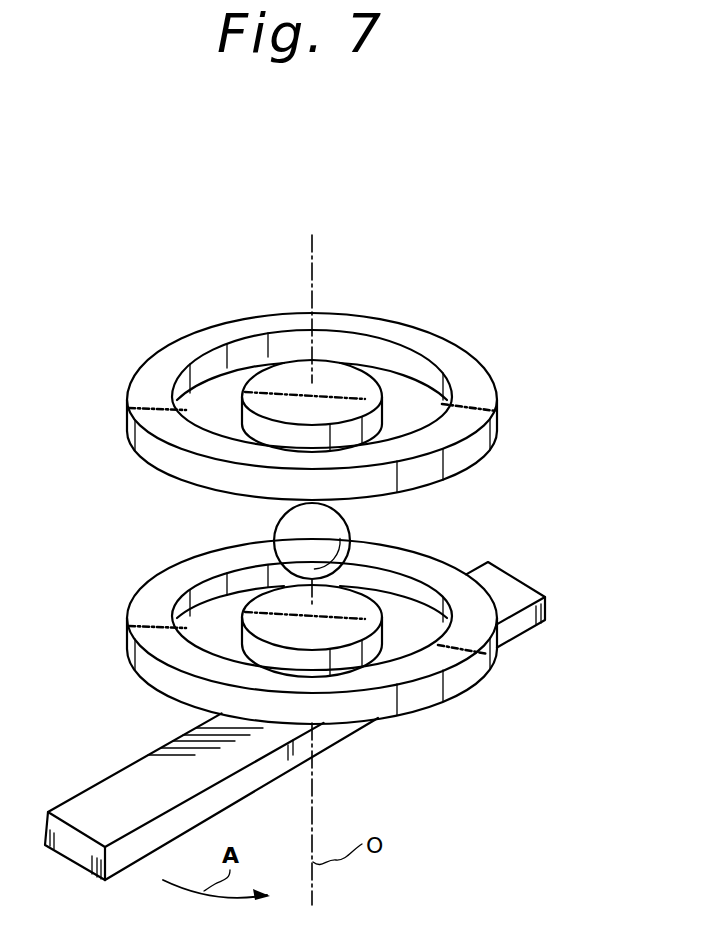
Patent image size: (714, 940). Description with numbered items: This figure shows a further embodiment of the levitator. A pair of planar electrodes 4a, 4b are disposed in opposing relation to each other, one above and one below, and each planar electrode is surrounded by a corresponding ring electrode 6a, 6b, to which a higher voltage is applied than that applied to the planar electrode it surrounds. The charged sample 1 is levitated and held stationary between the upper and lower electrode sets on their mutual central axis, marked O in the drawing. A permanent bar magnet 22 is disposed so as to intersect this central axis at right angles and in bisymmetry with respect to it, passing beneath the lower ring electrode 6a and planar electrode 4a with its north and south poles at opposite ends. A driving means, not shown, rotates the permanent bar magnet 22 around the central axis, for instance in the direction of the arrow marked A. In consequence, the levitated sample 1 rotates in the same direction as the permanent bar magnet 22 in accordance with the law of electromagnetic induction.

The charged sample 1 is at (274, 533).
The planar electrode 4a is at (353, 605).
The planar electrode 4b is at (340, 381).
The ring electrode 6a is at (470, 636).
The ring electrode 6b is at (473, 384).
The permanent bar magnet 22 is at (125, 785).